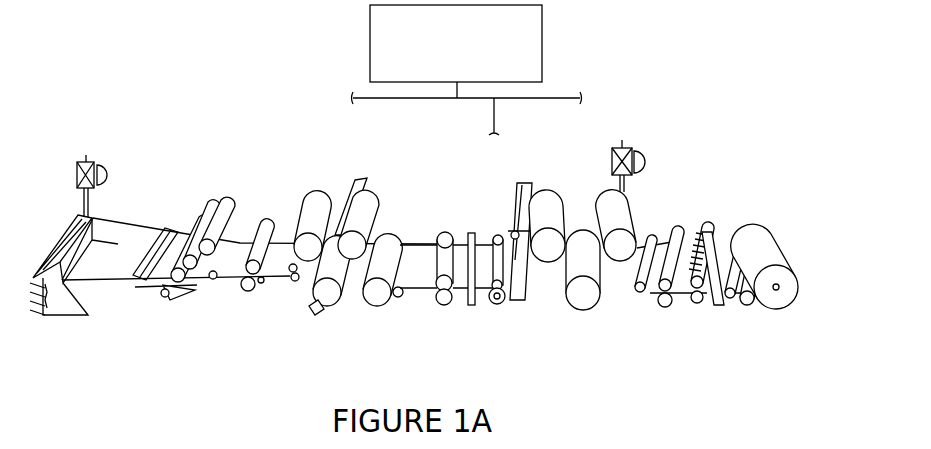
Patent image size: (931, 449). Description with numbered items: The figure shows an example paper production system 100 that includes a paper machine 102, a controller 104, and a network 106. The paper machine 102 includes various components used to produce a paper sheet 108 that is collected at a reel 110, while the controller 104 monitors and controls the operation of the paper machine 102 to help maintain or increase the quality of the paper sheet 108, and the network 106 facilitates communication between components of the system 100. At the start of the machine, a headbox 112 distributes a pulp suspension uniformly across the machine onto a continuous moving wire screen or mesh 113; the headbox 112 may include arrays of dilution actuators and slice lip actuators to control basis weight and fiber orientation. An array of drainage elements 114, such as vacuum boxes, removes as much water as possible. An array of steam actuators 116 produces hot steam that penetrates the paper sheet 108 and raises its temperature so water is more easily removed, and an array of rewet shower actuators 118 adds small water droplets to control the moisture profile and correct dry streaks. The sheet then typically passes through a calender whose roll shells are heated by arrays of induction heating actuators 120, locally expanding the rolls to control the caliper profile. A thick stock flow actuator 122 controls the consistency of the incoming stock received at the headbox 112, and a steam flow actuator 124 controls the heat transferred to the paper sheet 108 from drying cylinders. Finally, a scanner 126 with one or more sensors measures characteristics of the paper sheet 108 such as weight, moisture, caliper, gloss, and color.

The paper production system 100 is at (560, 412).
The paper machine 102 is at (237, 155).
The controller 104 is at (540, 80).
The network 106 is at (398, 100).
The paper sheet 108 is at (231, 277).
The reel 110 is at (785, 310).
The headbox 112 is at (47, 242).
The wire screen or mesh 113 is at (119, 250).
The drainage elements 114 is at (198, 289).
The steam actuators 116 is at (318, 324).
The rewet shower actuators 118 is at (476, 310).
The induction heating actuators 120 is at (702, 279).
The thick stock flow actuator 122 is at (100, 157).
The steam flow actuator 124 is at (632, 146).
The scanner 126 is at (706, 228).